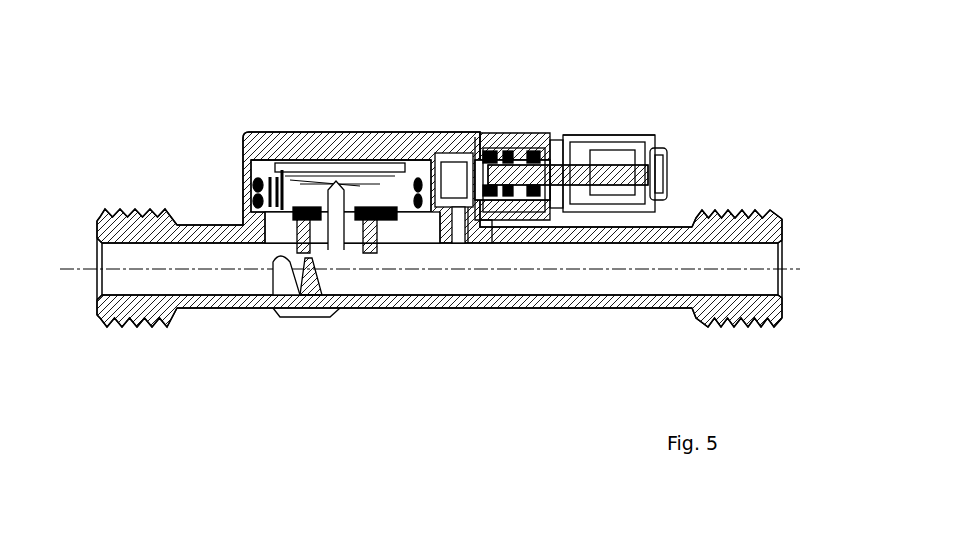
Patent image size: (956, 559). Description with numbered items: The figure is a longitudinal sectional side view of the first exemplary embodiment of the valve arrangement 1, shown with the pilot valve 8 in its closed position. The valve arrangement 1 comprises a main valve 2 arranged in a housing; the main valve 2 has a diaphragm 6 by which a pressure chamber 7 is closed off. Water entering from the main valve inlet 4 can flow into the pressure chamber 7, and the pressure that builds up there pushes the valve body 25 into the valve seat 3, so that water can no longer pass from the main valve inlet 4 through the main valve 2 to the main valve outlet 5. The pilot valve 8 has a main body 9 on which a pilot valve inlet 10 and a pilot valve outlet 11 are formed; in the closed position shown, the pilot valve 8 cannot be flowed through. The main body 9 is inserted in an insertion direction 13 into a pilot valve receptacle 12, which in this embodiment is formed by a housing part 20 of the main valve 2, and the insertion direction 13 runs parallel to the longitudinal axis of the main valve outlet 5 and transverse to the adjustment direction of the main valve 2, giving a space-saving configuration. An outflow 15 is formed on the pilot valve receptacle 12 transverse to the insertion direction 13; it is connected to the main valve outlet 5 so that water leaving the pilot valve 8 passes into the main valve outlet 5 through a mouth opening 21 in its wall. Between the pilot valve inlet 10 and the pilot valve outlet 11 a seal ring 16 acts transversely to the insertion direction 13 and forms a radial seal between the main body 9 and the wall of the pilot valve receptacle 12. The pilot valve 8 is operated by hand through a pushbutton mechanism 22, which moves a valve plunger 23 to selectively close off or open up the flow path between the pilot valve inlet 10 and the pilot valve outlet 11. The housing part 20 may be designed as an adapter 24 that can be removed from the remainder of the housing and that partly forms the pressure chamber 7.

The valve arrangement 1 is at (782, 186).
The main valve 2 is at (243, 147).
The valve seat 3 is at (374, 175).
The main valve inlet 4 is at (120, 263).
The main valve outlet 5 is at (657, 268).
The diaphragm 6 is at (370, 245).
The pressure chamber 7 is at (262, 155).
The pilot valve 8 is at (640, 115).
The main body 9 is at (655, 136).
The pilot valve inlet 10 is at (527, 150).
The pilot valve outlet 11 is at (490, 225).
The pilot valve receptacle 12 is at (515, 134).
The insertion direction 13 is at (610, 19).
The outflow 15 is at (468, 250).
The seal ring 16 is at (476, 136).
The housing part 20 is at (438, 150).
The mouth opening 21 is at (455, 205).
The pushbutton mechanism 22 is at (665, 178).
The valve plunger 23 is at (548, 146).
The adapter 24 is at (332, 148).
The valve body 25 is at (320, 255).